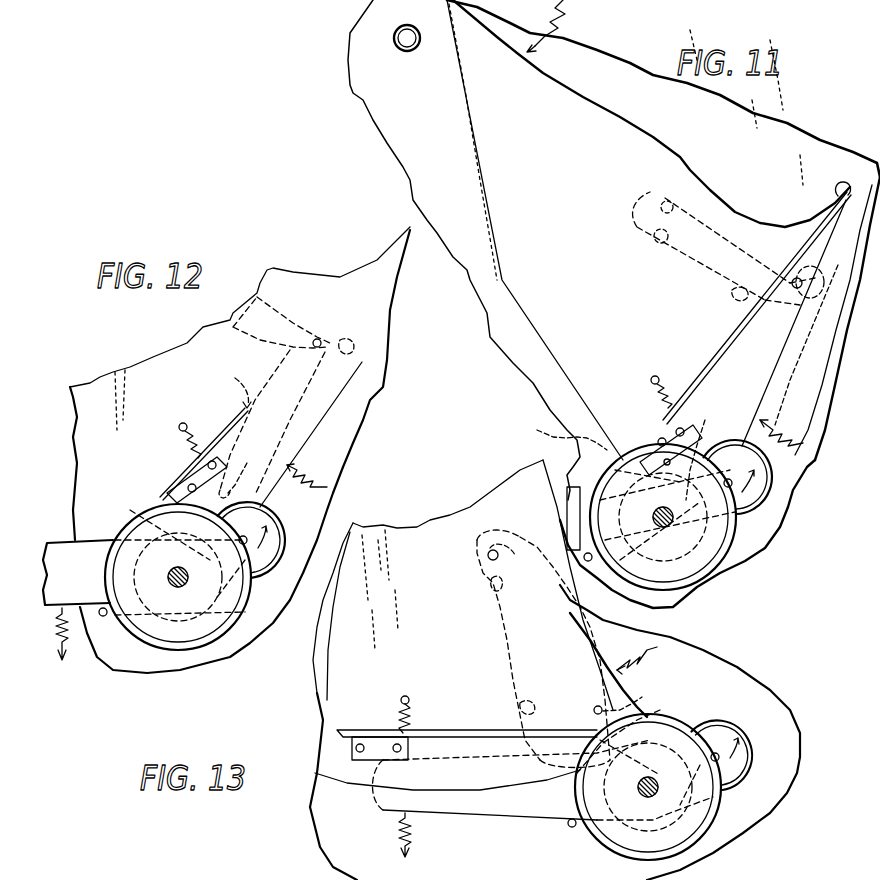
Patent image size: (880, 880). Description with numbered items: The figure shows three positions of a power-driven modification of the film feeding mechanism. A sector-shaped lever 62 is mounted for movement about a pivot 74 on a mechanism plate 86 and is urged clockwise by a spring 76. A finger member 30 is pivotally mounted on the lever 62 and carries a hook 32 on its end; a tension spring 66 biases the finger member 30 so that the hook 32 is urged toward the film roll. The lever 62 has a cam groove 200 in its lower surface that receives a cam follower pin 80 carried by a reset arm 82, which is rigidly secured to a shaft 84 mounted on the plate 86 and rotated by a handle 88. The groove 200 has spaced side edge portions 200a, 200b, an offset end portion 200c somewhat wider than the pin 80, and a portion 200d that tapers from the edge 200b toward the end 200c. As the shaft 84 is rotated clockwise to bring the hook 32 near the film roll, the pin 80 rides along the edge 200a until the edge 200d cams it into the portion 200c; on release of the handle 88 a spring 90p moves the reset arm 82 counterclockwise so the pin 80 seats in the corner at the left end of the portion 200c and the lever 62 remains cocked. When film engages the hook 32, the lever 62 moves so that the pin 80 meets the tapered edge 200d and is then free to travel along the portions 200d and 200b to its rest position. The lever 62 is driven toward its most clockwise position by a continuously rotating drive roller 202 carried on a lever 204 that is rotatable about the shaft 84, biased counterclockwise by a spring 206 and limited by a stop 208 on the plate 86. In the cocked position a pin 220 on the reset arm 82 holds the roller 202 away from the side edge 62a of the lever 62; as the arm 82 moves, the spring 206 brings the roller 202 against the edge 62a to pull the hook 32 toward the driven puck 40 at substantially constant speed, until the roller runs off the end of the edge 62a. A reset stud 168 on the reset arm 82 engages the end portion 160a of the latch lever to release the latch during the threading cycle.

In FIG. 11, the finger member 30 is at (718, 355).
In FIG. 12, the finger member 30 is at (227, 433).
In FIG. 13, the finger member 30 is at (415, 730).
In FIG. 11, the hook 32 is at (842, 187).
In FIG. 11, the driven roller or puck 40 is at (670, 525).
In FIG. 12, the driven roller or puck 40 is at (130, 507).
In FIG. 13, the driven roller or puck 40 is at (697, 847).
In FIG. 11, the sector-shaped lever 62 is at (648, 230).
In FIG. 12, the sector-shaped lever 62 is at (140, 363).
In FIG. 13, the sector-shaped lever 62 is at (432, 523).
In FIG. 11, the side edge of lever 62a is at (806, 340).
In FIG. 12, the side edge of lever 62a is at (336, 413).
In FIG. 13, the side edge of lever 62a is at (380, 786).
In FIG. 11, the tension spring 66 is at (650, 384).
In FIG. 12, the tension spring 66 is at (180, 428).
In FIG. 13, the tension spring 66 is at (400, 700).
In FIG. 11, the pivot 74 is at (419, 45).
In FIG. 11, the spring 76 is at (565, 10).
In FIG. 11, the cam follower pin 80 is at (785, 305).
In FIG. 12, the cam follower pin 80 is at (320, 327).
In FIG. 13, the cam follower pin 80 is at (486, 555).
In FIG. 11, the reset arm 82 is at (836, 334).
In FIG. 12, the reset arm 82 is at (229, 388).
In FIG. 13, the reset arm 82 is at (603, 630).
In FIG. 11, the shaft 84 is at (672, 525).
In FIG. 12, the shaft 84 is at (187, 585).
In FIG. 13, the shaft 84 is at (657, 792).
In FIG. 11, the mechanism plate 86 is at (368, 100).
In FIG. 12, the mechanism plate 86 is at (85, 440).
In FIG. 13, the mechanism plate 86 is at (317, 693).
In FIG. 13, the handle 88 is at (190, 879).
In FIG. 11, the spring 90p is at (805, 443).
In FIG. 12, the spring 90p is at (322, 474).
In FIG. 13, the spring 90p is at (647, 648).
In FIG. 11, the end portion of lever 160a is at (540, 432).
In FIG. 11, the reset stud 168 is at (670, 496).
In FIG. 11, the cam groove 200 is at (652, 268).
In FIG. 12, the cam groove 200 is at (233, 330).
In FIG. 13, the cam groove 200 is at (500, 636).
In FIG. 11, the side edge portion of groove 200a is at (661, 186).
In FIG. 13, the side edge portion of groove 200a is at (528, 547).
In FIG. 11, the side edge portion of groove 200b is at (652, 238).
In FIG. 13, the side edge portion of groove 200b is at (490, 589).
In FIG. 11, the offset end portion of groove 200c is at (822, 268).
In FIG. 12, the offset end portion of groove 200c is at (347, 333).
In FIG. 11, the tapered groove portion 200d is at (728, 295).
In FIG. 12, the tapered groove portion 200d is at (272, 424).
In FIG. 13, the tapered groove portion 200d is at (518, 707).
In FIG. 11, the lever drive puck or roller 202 is at (767, 482).
In FIG. 12, the lever drive puck or roller 202 is at (290, 527).
In FIG. 13, the lever drive puck or roller 202 is at (760, 745).
In FIG. 11, the lever 204 is at (746, 440).
In FIG. 12, the lever 204 is at (262, 488).
In FIG. 13, the lever 204 is at (705, 718).
In FIG. 12, the spring 206 is at (70, 664).
In FIG. 13, the spring 206 is at (412, 838).
In FIG. 11, the stop 208 is at (593, 560).
In FIG. 12, the stop 208 is at (105, 617).
In FIG. 13, the stop 208 is at (570, 828).
In FIG. 11, the pin 220 is at (708, 418).
In FIG. 12, the pin 220 is at (249, 468).
In FIG. 13, the pin 220 is at (636, 698).